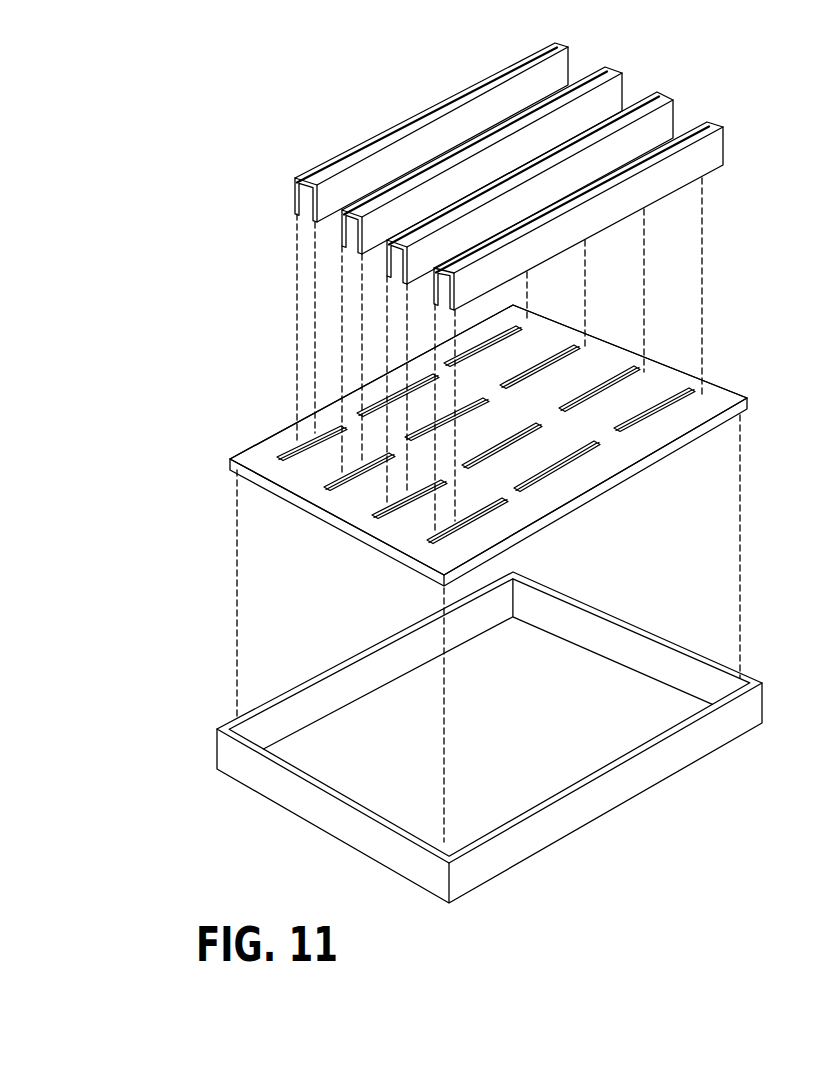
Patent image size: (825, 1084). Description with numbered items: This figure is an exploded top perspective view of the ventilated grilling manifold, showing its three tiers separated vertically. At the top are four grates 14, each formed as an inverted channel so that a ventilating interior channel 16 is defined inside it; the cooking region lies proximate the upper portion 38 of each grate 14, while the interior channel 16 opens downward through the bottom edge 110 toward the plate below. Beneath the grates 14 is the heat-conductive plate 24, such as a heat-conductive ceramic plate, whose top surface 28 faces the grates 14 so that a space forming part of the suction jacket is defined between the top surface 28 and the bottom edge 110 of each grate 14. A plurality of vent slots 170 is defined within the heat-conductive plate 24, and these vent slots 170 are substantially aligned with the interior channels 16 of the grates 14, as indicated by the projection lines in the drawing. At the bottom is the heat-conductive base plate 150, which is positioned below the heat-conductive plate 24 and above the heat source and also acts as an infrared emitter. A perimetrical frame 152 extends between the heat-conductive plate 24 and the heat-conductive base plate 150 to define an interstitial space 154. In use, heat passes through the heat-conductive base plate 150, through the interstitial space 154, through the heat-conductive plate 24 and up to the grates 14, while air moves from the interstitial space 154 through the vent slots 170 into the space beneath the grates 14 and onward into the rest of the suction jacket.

The grate 14 is at (706, 150).
The interior channel 16 is at (298, 196).
The upper portion of the grate 38 is at (352, 160).
The bottom edge of the grate 110 is at (326, 220).
The heat-conductive plate 24 is at (688, 442).
The top surface of the heat-conductive plate 28 is at (282, 442).
The vent slot 170 is at (677, 390).
The heat-conductive base plate 150 is at (353, 763).
The perimetrical frame 152 is at (653, 663).
The interstitial space 154 is at (296, 577).